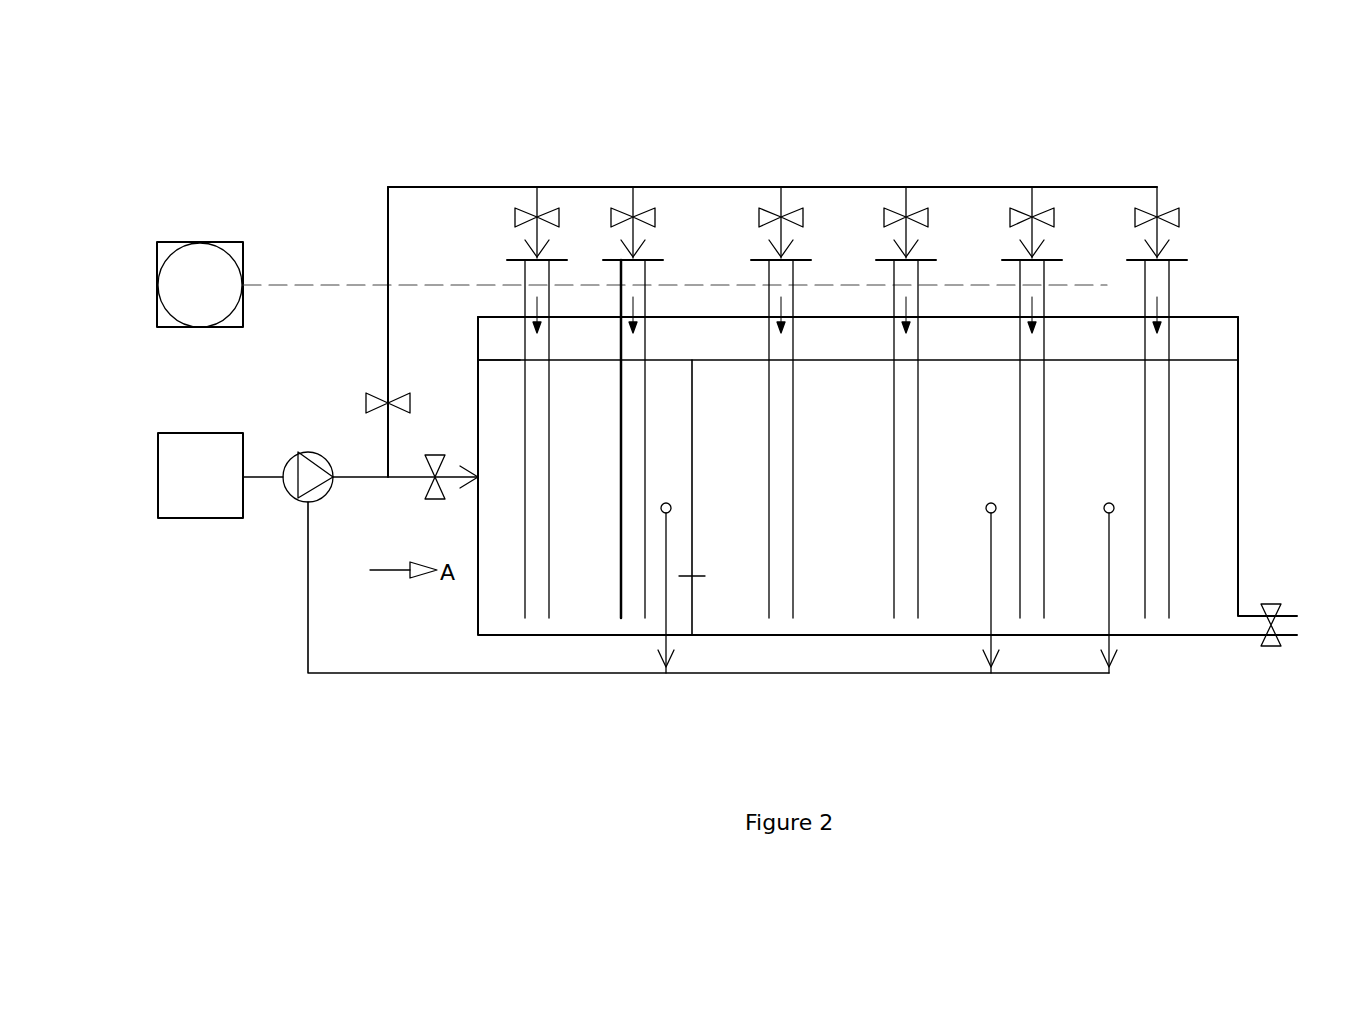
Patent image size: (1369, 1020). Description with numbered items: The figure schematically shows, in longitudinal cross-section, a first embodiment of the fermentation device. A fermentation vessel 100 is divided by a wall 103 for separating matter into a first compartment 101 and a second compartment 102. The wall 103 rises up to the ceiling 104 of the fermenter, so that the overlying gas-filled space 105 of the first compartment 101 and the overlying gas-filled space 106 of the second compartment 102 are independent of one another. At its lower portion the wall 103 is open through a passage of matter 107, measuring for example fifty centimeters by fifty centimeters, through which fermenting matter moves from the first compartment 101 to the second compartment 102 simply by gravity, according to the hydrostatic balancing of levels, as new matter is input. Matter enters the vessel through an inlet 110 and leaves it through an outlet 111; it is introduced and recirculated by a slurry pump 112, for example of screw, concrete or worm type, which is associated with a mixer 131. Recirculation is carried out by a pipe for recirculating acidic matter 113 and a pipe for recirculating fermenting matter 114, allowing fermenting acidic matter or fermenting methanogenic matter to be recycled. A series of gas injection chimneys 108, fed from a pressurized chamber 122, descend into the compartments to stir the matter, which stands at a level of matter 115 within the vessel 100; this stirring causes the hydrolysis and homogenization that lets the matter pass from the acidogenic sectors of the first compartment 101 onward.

The fermentation vessel 100 is at (1078, 598).
The first compartment 101 is at (497, 610).
The second compartment 102 is at (848, 598).
The wall for separating matter 103 is at (693, 330).
The ceiling of the fermenter 104 is at (1100, 278).
The overlying gas-filled space of the first compartment 105 is at (508, 333).
The overlying gas-filled space of the second compartment 106 is at (1210, 345).
The passage of matter 107 is at (693, 598).
The gas injection chimneys 108 is at (635, 270).
The inlet of matter 110 is at (418, 482).
The outlet of matter 111 is at (1255, 620).
The slurry pump 112 is at (302, 497).
The pipe for recirculating acidic matter 113 is at (667, 598).
The pipe for recirculating fermenting matter 114 is at (1122, 187).
The level of matter 115 is at (992, 355).
The pressurized chamber 122 is at (210, 267).
The mixer 131 is at (210, 488).